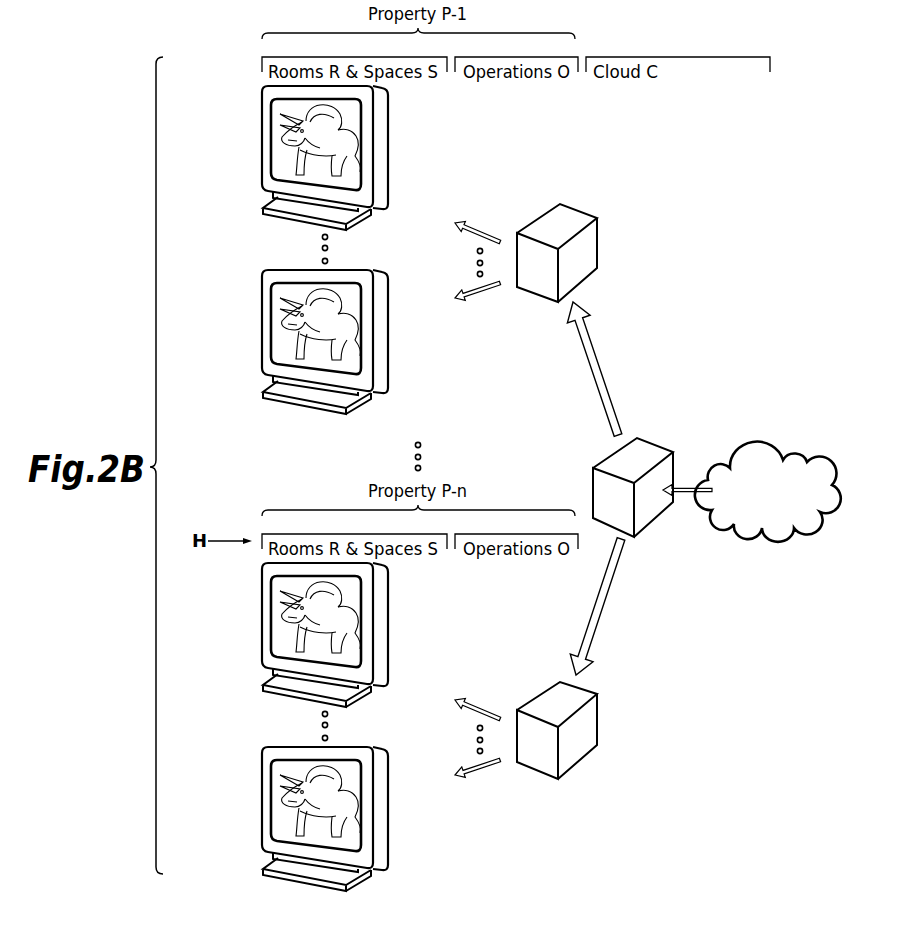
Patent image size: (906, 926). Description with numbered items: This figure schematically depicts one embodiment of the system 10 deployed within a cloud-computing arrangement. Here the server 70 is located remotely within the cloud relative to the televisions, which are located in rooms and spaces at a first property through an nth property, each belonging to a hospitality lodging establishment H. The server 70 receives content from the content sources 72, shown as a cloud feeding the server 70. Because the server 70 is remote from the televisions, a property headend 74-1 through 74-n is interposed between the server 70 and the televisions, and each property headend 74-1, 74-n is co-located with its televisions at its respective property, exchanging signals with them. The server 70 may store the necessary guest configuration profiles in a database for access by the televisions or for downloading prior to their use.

The system 10 is at (141, 98).
The server 70 is at (657, 430).
The content sources 72 is at (777, 445).
The property headend 74-1 is at (577, 199).
The property headend 74-n is at (584, 770).
The hospitality lodging establishment H is at (246, 64).